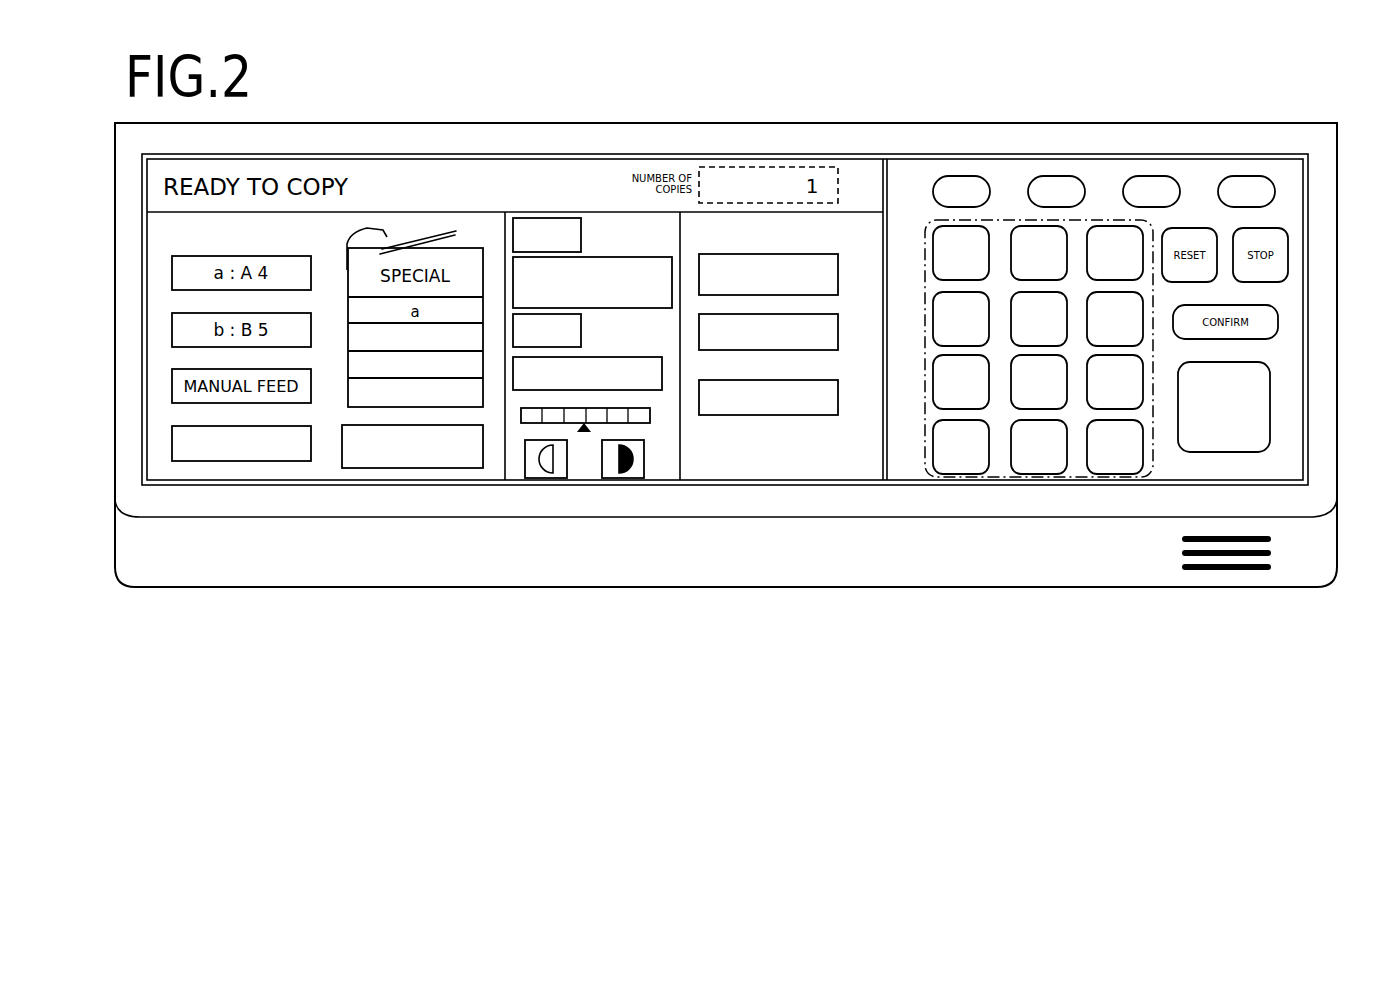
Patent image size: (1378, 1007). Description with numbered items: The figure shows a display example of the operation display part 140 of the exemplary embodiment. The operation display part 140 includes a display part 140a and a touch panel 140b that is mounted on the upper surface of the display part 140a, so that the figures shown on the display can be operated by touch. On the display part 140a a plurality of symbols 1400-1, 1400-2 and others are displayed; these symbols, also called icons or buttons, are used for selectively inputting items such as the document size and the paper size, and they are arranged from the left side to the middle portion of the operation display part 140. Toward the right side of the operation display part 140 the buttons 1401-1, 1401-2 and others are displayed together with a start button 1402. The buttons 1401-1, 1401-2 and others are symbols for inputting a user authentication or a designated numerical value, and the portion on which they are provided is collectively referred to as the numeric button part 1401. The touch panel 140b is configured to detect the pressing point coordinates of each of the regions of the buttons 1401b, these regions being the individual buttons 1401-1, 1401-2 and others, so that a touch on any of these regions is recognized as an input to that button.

The operation display part 140 is at (138, 588).
The symbol 1400-1 is at (238, 461).
The symbol 1400-2 is at (368, 468).
The touch panel 140b is at (584, 470).
The display part 140a is at (758, 472).
The numeric button part 1401 is at (1107, 268).
The button 1401-1 is at (983, 232).
The button 1401-2 is at (1140, 93).
The button 1401b is at (1146, 267).
The start button 1402 is at (1202, 452).